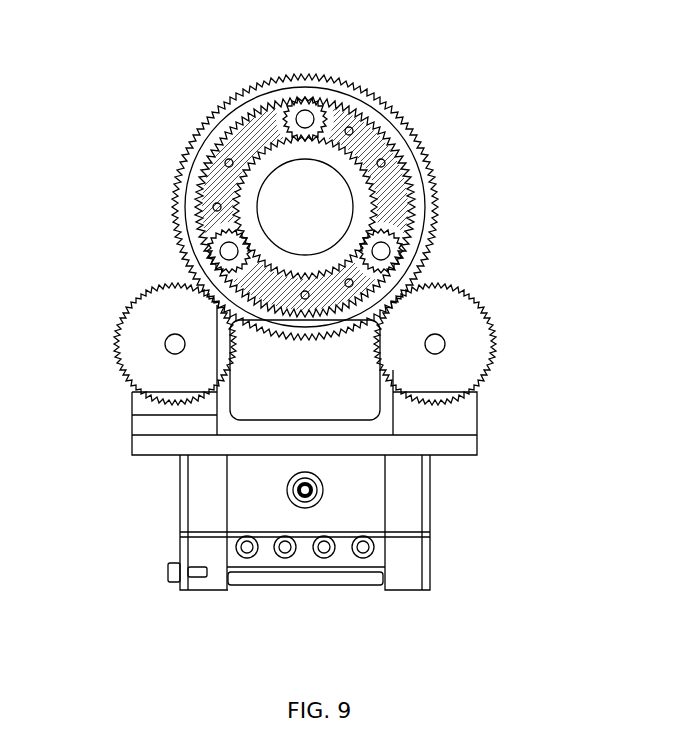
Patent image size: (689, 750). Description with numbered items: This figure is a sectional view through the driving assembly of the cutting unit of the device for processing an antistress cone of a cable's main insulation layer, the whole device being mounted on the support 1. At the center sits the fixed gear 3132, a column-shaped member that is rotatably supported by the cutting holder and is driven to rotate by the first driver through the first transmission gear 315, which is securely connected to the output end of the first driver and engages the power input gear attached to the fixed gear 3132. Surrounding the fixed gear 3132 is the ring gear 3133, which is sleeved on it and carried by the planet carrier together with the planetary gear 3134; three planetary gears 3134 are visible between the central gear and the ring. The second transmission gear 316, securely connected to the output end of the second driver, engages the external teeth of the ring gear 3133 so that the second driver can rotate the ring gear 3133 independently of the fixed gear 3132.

The support 1 is at (410, 485).
The first transmission gear 315 is at (135, 330).
The second transmission gear 316 is at (470, 318).
The fixed gear 3132 is at (358, 188).
The ring gear 3133 is at (400, 122).
The planetary gear 3134 is at (322, 105).